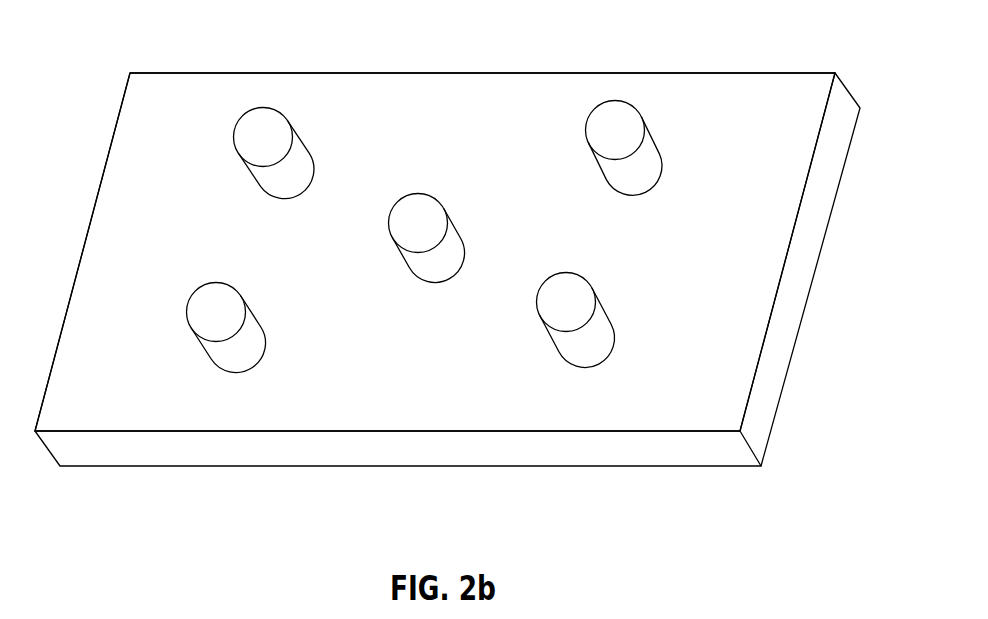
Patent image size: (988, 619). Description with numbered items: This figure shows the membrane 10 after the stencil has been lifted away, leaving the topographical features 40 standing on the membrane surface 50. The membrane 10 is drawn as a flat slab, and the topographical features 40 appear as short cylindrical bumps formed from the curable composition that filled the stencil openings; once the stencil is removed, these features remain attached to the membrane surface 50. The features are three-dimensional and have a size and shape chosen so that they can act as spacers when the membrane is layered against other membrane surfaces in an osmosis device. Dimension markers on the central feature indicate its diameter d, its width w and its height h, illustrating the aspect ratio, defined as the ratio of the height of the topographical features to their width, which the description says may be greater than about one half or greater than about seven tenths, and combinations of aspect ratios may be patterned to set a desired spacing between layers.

The membrane 10 is at (155, 452).
The topographical features 40 is at (562, 297).
The membrane surface 50 is at (517, 405).
The pillar diameter d is at (383, 193).
The pillar width w is at (388, 255).
The pillar height h is at (425, 187).